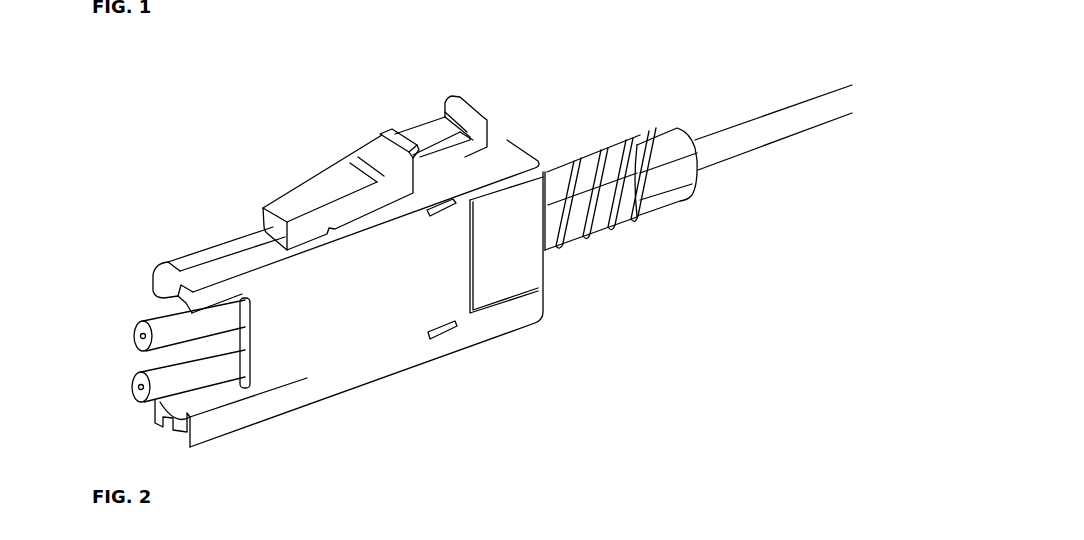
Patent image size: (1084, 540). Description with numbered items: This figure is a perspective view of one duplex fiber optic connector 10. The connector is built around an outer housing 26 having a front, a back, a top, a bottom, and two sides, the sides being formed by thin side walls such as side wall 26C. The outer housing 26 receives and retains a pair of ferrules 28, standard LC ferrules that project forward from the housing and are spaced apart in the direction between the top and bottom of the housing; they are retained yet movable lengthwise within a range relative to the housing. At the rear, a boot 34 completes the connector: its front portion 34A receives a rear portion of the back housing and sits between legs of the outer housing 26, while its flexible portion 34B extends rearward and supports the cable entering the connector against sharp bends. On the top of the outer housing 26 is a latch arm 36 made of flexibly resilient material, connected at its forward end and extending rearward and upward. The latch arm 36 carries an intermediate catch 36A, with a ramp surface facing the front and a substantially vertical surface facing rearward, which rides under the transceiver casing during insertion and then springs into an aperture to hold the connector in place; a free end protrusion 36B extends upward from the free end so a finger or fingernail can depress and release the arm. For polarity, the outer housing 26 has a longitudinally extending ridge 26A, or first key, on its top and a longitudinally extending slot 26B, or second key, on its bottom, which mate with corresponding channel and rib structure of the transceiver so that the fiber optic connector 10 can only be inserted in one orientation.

The fiber optic connector 10 is at (598, 72).
The outer housing 26 is at (297, 410).
The longitudinally extending ridge 26A is at (228, 250).
The longitudinally extending slot 26B is at (168, 424).
The side wall 26C is at (352, 307).
The ferrules 28 is at (160, 369).
The boot 34 is at (660, 252).
The front portion 34A is at (803, 133).
The flexible portion 34B is at (677, 130).
The latch arm 36 is at (313, 184).
The intermediate catch 36A is at (380, 150).
The free end protrusion 36B is at (463, 108).